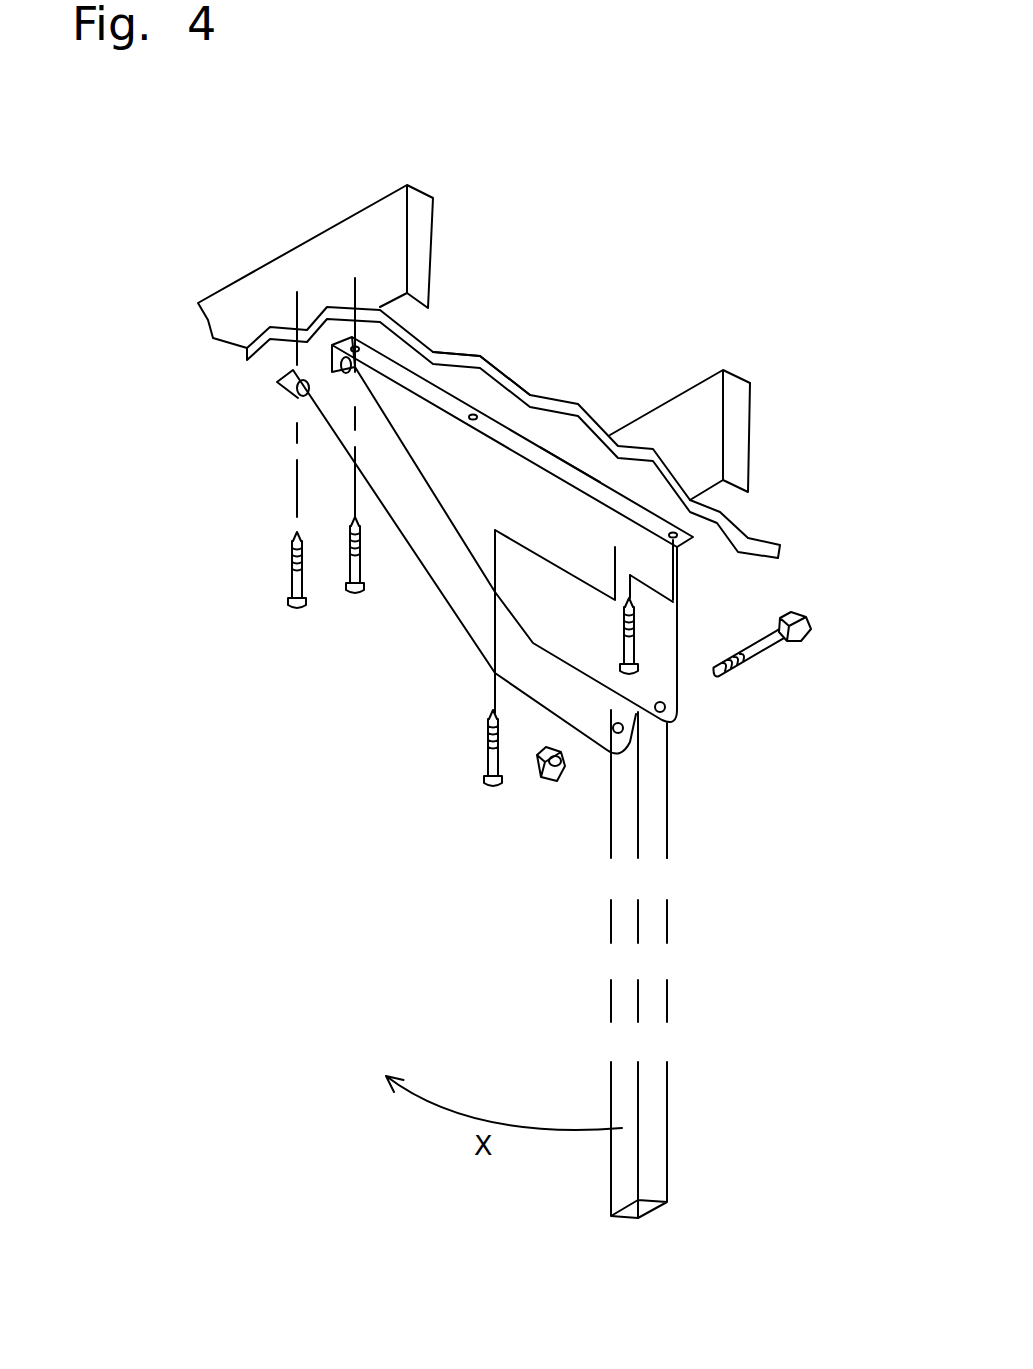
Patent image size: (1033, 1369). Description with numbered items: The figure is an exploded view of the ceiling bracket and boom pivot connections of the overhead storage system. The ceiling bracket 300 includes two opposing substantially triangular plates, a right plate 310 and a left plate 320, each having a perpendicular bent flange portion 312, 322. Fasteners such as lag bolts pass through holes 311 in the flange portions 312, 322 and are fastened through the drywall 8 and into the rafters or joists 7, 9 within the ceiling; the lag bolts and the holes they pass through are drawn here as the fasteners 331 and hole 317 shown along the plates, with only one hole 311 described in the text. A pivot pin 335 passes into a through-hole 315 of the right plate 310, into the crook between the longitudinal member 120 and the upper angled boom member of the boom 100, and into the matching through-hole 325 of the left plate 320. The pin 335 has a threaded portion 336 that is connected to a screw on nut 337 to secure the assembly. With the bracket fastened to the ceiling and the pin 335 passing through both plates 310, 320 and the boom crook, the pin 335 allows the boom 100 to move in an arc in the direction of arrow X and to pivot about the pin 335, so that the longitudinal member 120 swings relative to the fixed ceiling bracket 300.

The rafter/joist 7 is at (368, 221).
The drywall 8 is at (277, 352).
The rafter/joist 9 is at (757, 430).
The ceiling bracket 300 is at (180, 473).
The right plate 310 is at (680, 636).
The hole 311 is at (523, 398).
The bent flange portion 312 is at (563, 462).
The through-hole 315 is at (663, 716).
The groove 317 is at (437, 348).
The left plate 320 is at (442, 603).
The bent flange portion 322 is at (277, 382).
The through-hole 325 is at (620, 736).
The screws 331 is at (293, 612).
The pivot pin 335 is at (813, 631).
The threaded portion 336 is at (737, 672).
The screw on nut 337 is at (546, 788).
The boom 100 is at (704, 1134).
The longitudinal member 120 is at (669, 823).